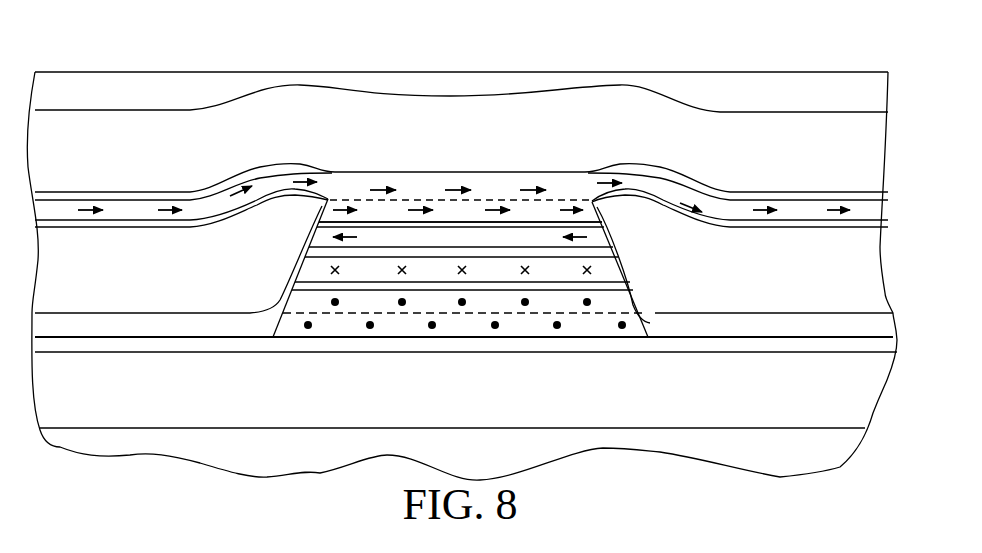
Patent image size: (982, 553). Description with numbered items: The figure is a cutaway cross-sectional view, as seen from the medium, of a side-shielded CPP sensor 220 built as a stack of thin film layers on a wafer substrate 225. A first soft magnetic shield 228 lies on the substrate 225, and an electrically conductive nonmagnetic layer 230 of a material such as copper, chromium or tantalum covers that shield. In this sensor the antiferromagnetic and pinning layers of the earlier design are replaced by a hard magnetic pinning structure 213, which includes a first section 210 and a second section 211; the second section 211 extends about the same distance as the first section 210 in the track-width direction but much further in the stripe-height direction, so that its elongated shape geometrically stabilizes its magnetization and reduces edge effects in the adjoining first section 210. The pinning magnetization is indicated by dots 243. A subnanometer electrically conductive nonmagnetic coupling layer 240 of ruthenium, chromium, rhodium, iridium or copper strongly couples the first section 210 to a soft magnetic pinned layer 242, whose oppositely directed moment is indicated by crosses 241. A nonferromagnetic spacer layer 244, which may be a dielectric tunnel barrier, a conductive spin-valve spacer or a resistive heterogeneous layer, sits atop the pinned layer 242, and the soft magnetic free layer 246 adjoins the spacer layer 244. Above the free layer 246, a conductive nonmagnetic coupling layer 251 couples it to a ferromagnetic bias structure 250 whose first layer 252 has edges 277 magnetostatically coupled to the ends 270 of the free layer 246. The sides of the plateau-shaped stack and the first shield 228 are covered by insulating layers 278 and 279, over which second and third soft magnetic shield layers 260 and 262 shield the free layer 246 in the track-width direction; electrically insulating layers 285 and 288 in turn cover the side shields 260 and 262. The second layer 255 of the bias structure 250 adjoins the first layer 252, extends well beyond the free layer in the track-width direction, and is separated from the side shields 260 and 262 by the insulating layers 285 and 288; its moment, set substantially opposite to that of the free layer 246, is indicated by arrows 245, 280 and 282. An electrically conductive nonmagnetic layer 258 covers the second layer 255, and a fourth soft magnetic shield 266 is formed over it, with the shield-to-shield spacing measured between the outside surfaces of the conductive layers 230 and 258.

The side-shielded CPP sensor 220 is at (194, 101).
The fourth soft magnetic shield 266 is at (57, 158).
The electrically insulating layer 285 is at (143, 219).
The electrically insulating layer 288 is at (736, 219).
The arrow 245 is at (302, 180).
The arrow 282 is at (593, 196).
The second layer of the ferromagnetic bias structure 255 is at (354, 172).
The electrically conductive nonmagnetic layer 258 is at (406, 172).
The ferromagnetic bias structure 250 is at (525, 172).
The electrically conductive nonmagnetic coupling layer 251 is at (558, 207).
The first layer of the bias structure 252 is at (484, 192).
The free layer 246 is at (445, 222).
The edges of the first layer 277 is at (316, 215).
The ends of the free layer 270 is at (307, 241).
The crosses 241 is at (330, 269).
The nonferromagnetic spacer layer 244 is at (355, 258).
The arrow 280 is at (570, 258).
The soft magnetic pinned layer 242 is at (427, 283).
The electrically conductive nonmagnetic coupling layer 240 is at (488, 293).
The dots 243 is at (588, 301).
The second section of the hard magnetic pinning structure 211 is at (650, 323).
The first section of the hard magnetic pinning structure 210 is at (267, 321).
The insulating layer 278 is at (156, 319).
The insulating layer 279 is at (773, 312).
The second soft magnetic shield layer 260 is at (57, 278).
The third soft magnetic shield layer 262 is at (830, 275).
The hard magnetic pinning structure 213 is at (600, 339).
The electrically conductive nonmagnetic layer 230 is at (145, 353).
The first soft magnetic shield 228 is at (749, 400).
The wafer substrate 225 is at (459, 455).